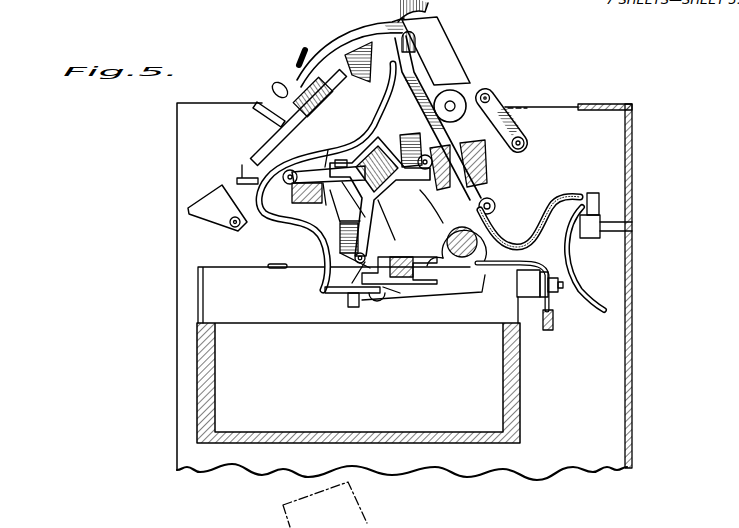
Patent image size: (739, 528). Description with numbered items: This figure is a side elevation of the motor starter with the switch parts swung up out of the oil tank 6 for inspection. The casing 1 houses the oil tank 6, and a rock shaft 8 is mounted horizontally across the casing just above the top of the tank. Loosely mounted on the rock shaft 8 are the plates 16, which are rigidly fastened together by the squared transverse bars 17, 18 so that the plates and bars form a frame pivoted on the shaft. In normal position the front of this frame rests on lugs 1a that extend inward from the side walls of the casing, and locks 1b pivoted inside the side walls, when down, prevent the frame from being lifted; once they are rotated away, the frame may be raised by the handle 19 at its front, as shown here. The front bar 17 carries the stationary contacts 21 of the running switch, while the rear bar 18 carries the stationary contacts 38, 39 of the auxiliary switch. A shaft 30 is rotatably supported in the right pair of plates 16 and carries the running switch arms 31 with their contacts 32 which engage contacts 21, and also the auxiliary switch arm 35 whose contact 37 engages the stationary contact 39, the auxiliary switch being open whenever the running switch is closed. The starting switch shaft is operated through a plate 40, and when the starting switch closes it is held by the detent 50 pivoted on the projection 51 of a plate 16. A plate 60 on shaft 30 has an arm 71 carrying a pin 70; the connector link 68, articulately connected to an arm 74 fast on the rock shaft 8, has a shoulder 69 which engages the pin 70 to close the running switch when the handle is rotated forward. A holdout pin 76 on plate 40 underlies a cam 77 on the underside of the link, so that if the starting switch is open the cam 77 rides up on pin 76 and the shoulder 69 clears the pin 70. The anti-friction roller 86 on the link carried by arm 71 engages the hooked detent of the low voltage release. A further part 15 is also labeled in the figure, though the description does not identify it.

The casing 1 is at (180, 303).
The lugs 1a is at (279, 264).
The locks 1b is at (554, 261).
The oil tank 6 is at (215, 371).
The rock shaft 8 is at (460, 258).
The wedge lever 15 is at (215, 203).
The plates 16 is at (313, 128).
The front bar 17 is at (278, 84).
The rear bar 18 is at (400, 278).
The handle 19 is at (297, 55).
The stationary contacts of the running switch 21 is at (255, 113).
The shaft 30 is at (382, 200).
The running switch arms 31 is at (329, 150).
The contacts 32 is at (242, 165).
The auxiliary switch arm 35 is at (375, 245).
The contact 37 is at (346, 295).
The stationary contact of the auxiliary switch 38 is at (450, 244).
The stationary contact of the auxiliary switch 39 is at (356, 308).
The plate 40 is at (372, 148).
The detent 50 is at (421, 26).
The projection 51 is at (387, 28).
The plate 60 is at (372, 116).
The connector link 68 is at (438, 52).
The shoulder 69 is at (447, 90).
The pin 70 is at (454, 103).
The arm 71 is at (493, 92).
The arm 74 is at (452, 205).
The pin 76 is at (416, 170).
The cam 77 is at (393, 121).
The anti-friction roller 86 is at (523, 120).